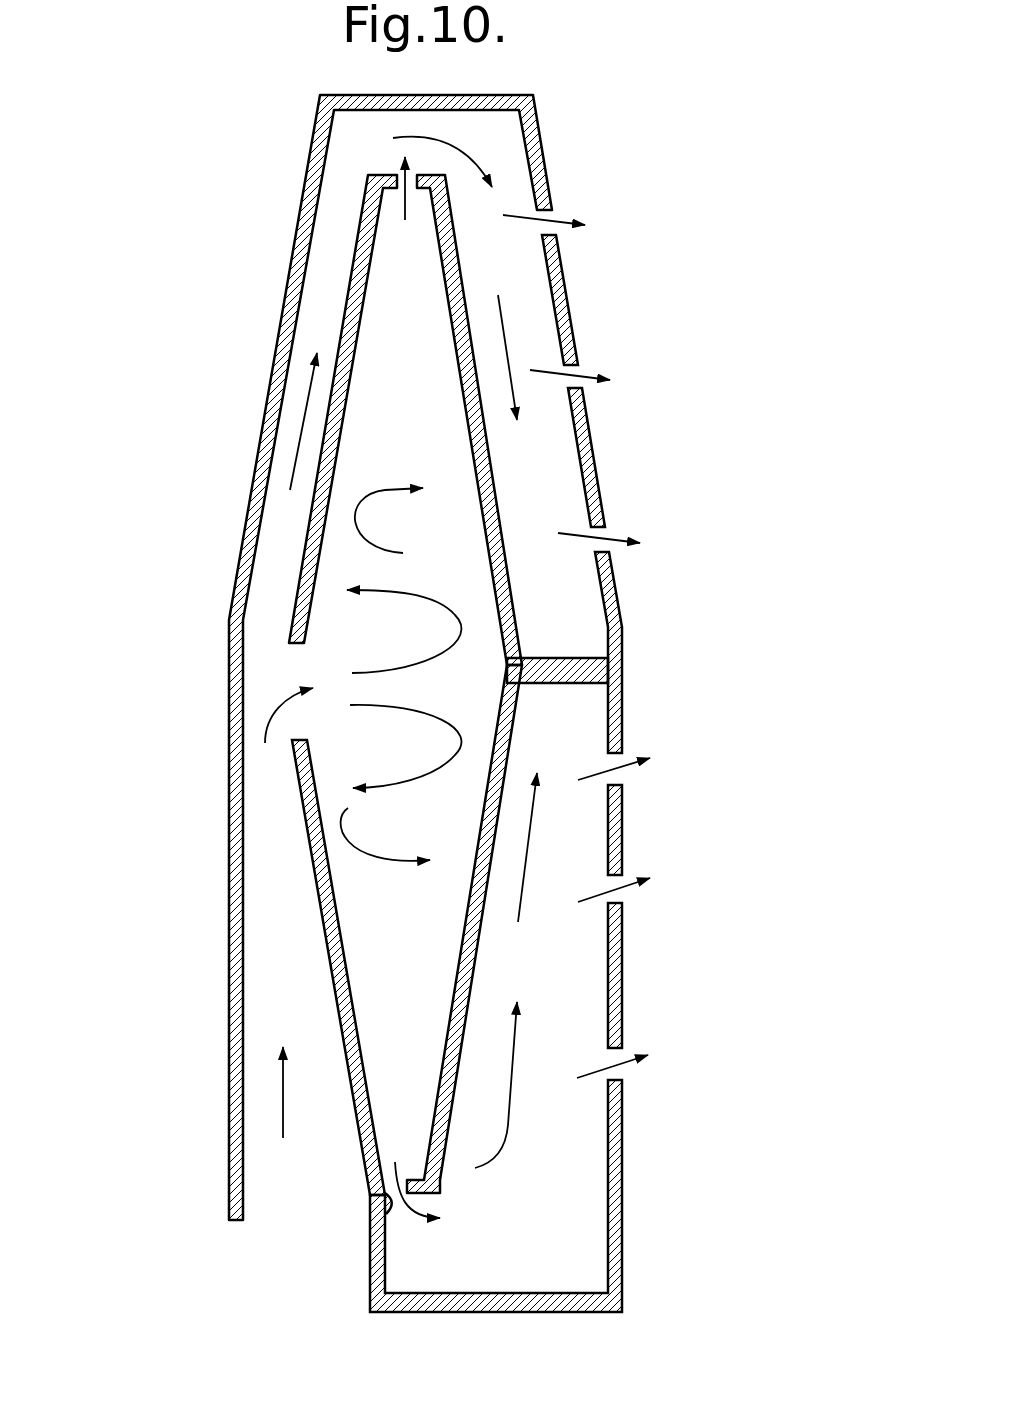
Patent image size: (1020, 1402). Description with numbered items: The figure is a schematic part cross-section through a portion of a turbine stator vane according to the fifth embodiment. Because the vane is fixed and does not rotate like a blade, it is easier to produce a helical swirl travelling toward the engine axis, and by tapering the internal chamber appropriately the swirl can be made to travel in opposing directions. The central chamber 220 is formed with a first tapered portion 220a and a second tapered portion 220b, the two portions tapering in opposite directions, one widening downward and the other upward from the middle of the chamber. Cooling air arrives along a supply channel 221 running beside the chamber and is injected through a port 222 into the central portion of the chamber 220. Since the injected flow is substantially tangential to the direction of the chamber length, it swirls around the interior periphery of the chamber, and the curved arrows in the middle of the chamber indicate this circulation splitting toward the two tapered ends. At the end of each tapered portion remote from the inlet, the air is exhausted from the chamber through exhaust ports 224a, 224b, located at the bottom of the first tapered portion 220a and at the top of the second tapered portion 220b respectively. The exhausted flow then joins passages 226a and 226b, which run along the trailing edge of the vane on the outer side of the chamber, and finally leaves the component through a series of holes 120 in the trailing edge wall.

The holes 120 is at (550, 217).
The chamber 220 is at (478, 697).
The first tapered portion 220a is at (442, 991).
The second tapered portion 220b is at (442, 316).
The supply channel 221 is at (312, 988).
The port 222 is at (228, 655).
The exhaust port 224a is at (388, 1210).
The exhaust port 224b is at (397, 173).
The passage 226a is at (570, 988).
The passage 226b is at (572, 470).